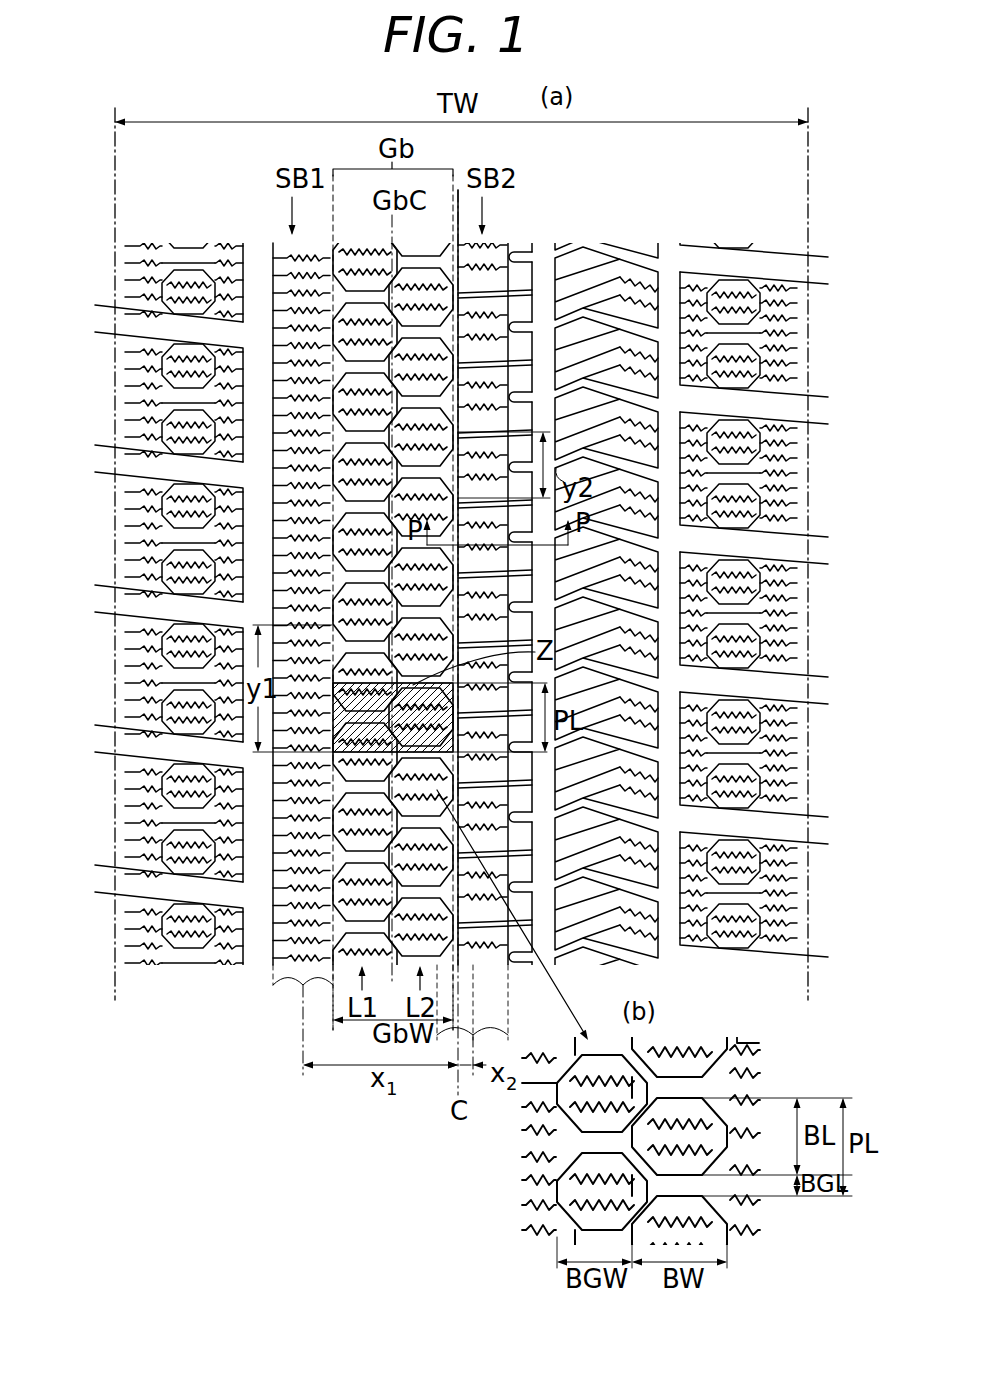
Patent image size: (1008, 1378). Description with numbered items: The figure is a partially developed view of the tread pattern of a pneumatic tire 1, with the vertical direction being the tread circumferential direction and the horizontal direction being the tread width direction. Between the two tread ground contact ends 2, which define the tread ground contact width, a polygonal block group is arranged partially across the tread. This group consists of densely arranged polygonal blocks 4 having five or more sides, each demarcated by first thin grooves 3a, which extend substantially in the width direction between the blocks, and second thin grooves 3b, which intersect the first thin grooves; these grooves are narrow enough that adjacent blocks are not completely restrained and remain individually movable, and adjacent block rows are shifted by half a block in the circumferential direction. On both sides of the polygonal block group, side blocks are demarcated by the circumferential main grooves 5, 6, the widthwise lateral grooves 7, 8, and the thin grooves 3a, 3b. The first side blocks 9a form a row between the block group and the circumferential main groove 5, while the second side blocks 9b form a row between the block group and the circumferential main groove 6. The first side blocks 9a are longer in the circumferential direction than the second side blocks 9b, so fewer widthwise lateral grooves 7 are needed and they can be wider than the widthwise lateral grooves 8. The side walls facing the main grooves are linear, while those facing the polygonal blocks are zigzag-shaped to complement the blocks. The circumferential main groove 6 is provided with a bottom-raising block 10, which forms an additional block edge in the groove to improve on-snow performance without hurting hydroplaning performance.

The pneumatic tire 1 is at (702, 207).
The tread ground contact end 2 is at (115, 177).
The first thin groove 3a is at (342, 366).
The second thin groove 3b is at (345, 430).
The polygonal block 4 is at (353, 404).
The circumferential main groove 5 is at (253, 257).
The circumferential main groove 6 is at (541, 257).
The widthwise lateral groove 7 is at (287, 757).
The widthwise lateral groove 8 is at (512, 572).
The first side block 9a is at (299, 828).
The second side block 9b is at (486, 882).
The bottom-raising block 10 is at (548, 290).